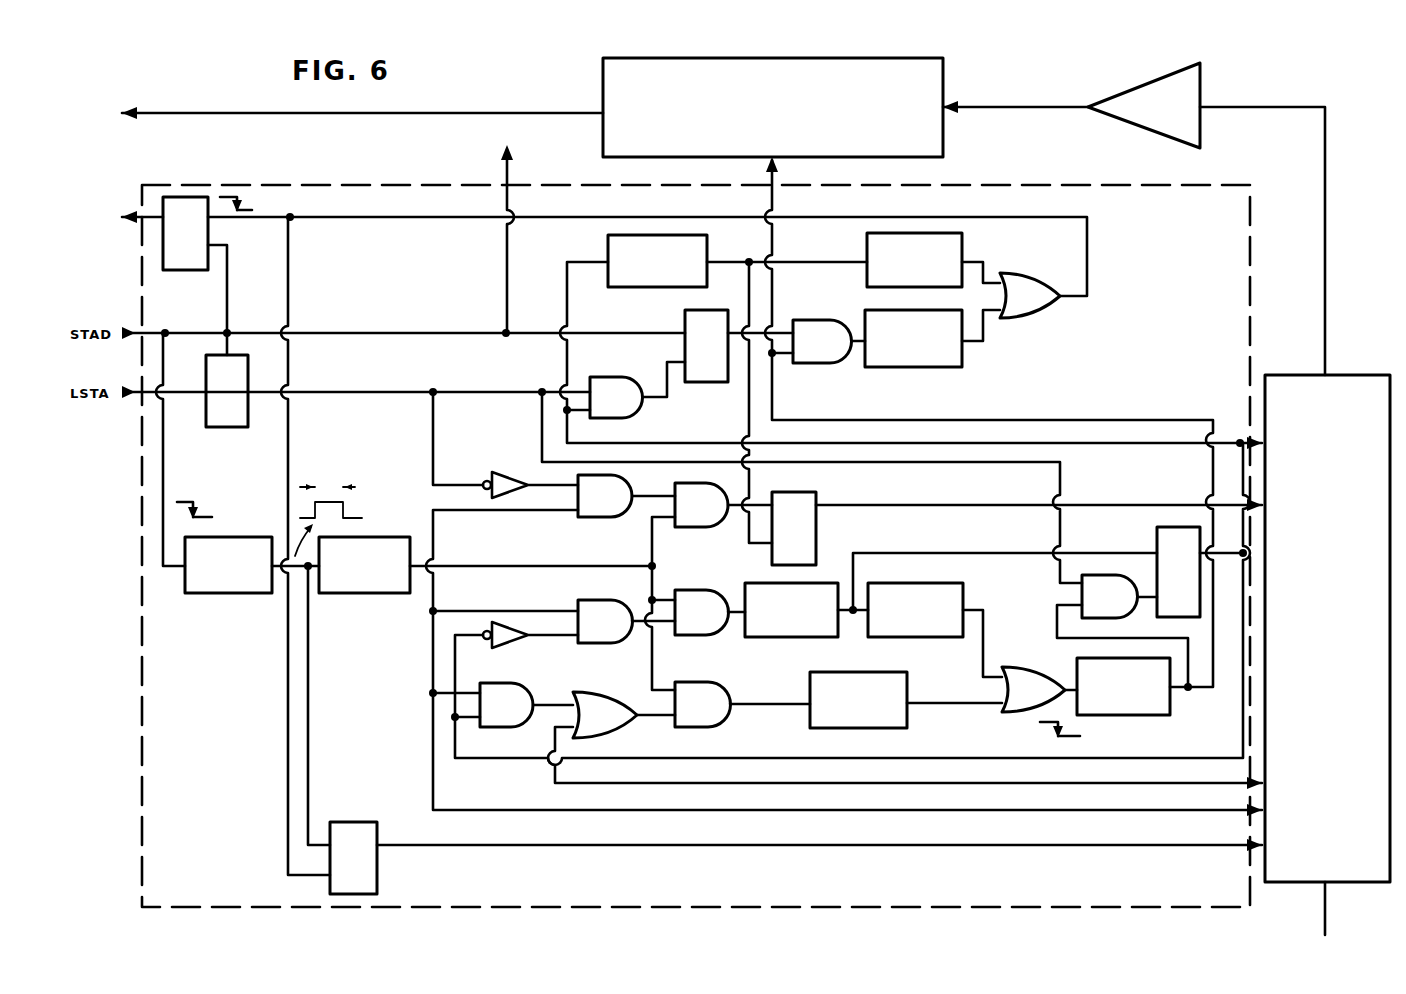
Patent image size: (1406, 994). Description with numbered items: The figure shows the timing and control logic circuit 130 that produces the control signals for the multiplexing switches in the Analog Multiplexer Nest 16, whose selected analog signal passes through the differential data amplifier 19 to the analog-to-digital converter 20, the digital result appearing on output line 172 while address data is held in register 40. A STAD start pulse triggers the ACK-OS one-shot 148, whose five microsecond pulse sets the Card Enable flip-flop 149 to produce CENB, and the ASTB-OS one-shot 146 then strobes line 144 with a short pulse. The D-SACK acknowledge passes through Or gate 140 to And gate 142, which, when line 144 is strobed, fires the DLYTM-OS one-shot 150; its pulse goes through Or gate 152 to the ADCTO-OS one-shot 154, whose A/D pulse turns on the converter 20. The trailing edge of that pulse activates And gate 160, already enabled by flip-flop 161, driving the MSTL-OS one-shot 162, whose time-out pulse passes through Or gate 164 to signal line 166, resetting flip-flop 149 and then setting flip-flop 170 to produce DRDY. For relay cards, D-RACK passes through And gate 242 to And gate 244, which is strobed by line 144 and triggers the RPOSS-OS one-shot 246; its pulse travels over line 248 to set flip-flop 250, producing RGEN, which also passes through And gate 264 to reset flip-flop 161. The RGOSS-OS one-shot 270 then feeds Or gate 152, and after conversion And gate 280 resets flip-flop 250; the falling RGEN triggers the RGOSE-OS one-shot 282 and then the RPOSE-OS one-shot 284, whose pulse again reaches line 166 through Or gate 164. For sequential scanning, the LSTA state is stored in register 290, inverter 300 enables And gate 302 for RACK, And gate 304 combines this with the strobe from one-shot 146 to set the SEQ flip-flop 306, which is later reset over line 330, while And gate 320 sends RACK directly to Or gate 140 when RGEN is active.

The Analog Multiplexer Nest 16 is at (1318, 671).
The Differential Data Amplifier 19 is at (1172, 117).
The Analog-to-Digital converter 20 is at (786, 148).
The register 40 is at (562, 143).
The Control Logic circuit 130 is at (1240, 206).
The Or gate 140 is at (593, 692).
The And gate 142 is at (690, 682).
The input line 144 is at (650, 535).
The one-shot multivibrator 146 is at (365, 595).
The one-shot 148 is at (222, 595).
The Card Enable flip-flop 149 is at (352, 822).
The one-shot 150 is at (845, 729).
The Or gate 152 is at (1022, 667).
The one-shot device 154 is at (1122, 716).
The And gate 160 is at (807, 320).
The flip-flop 161 is at (708, 310).
The one-shot 162 is at (898, 368).
The Or gate 164 is at (1022, 273).
The signal line 166 is at (385, 220).
The flip-flop 170 is at (190, 272).
The output line 172 is at (190, 115).
The And gate 242 is at (585, 600).
The And gate 244 is at (685, 590).
The one-shot 246 is at (762, 637).
The line 248 is at (903, 557).
The flip-flop 250 is at (1165, 530).
The And gate 264 is at (595, 377).
The one-shot 270 is at (892, 637).
The And gate 280 is at (1082, 598).
The one-shot 282 is at (640, 288).
The one-shot 284 is at (866, 256).
The register 290 is at (235, 430).
The Inverter 300 is at (505, 470).
The And gate 302 is at (578, 520).
The And gate 304 is at (710, 530).
The flip-flop 306 is at (800, 492).
The And gate 320 is at (495, 683).
The line 330 is at (745, 402).